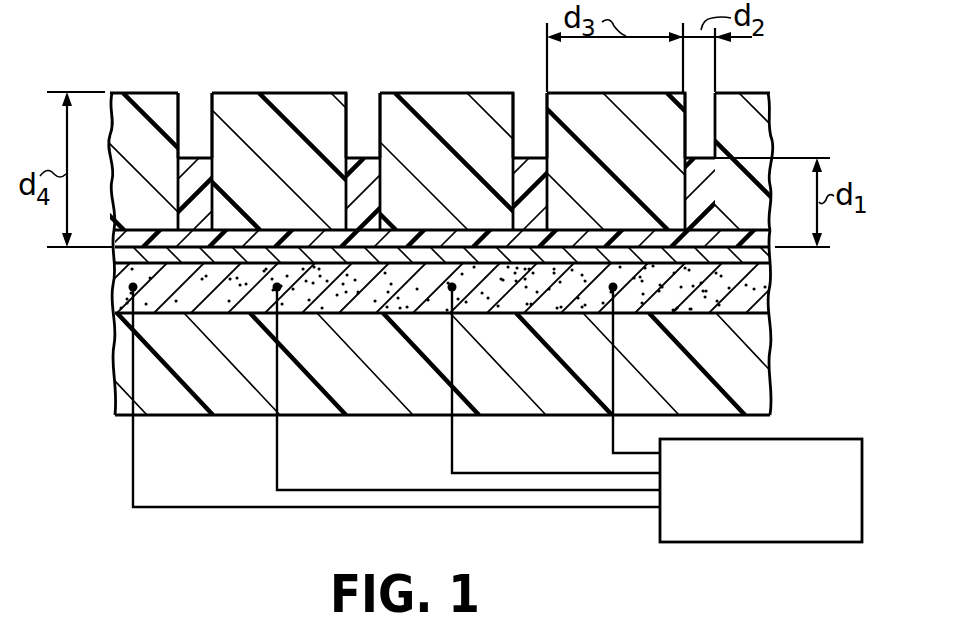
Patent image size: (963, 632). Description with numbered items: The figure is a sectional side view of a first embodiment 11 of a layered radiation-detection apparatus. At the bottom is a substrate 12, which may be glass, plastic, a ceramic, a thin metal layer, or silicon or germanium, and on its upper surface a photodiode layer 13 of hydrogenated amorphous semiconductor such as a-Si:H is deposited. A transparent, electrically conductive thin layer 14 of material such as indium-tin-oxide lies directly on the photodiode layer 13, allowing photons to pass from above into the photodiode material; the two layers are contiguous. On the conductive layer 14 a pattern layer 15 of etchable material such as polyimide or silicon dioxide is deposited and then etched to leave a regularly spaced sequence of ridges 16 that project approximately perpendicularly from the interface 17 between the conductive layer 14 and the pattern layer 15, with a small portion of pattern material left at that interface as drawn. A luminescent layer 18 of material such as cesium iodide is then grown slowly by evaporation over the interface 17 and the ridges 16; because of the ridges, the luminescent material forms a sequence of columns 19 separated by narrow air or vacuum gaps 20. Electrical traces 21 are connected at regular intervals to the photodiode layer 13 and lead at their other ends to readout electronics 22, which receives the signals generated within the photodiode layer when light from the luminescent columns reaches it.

The first embodiment 11 is at (802, 58).
The substrate 12 is at (772, 386).
The photodiode layer 13 is at (772, 290).
The conductive layer 14 is at (772, 262).
The pattern layer 15 is at (772, 240).
The ridges 16 is at (207, 100).
The interface 17 is at (112, 258).
The luminescent layer 18 is at (770, 136).
The columns 19 is at (149, 92).
The gaps 20 is at (188, 105).
The electrical traces 21 is at (133, 470).
The readout electronics 22 is at (660, 526).